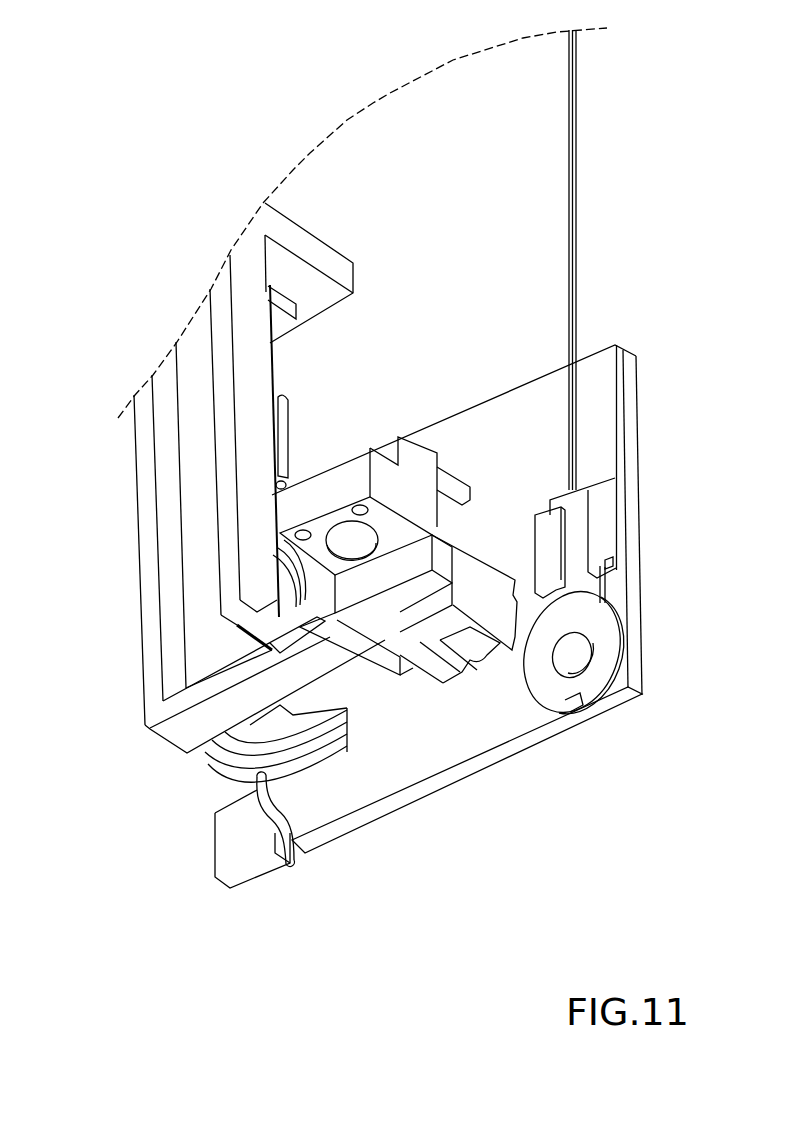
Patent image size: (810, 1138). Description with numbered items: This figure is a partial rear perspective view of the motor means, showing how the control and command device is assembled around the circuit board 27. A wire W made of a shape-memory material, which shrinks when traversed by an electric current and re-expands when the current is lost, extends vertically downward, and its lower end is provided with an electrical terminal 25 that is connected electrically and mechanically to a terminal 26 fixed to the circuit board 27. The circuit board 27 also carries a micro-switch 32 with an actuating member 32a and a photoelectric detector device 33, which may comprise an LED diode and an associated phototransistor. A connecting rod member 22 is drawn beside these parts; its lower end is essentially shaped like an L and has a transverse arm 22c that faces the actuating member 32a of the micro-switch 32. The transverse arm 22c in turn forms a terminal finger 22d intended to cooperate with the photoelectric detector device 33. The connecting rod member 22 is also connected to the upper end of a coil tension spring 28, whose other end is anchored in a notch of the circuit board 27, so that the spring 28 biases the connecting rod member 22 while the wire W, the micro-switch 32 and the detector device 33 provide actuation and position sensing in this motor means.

The wire W is at (577, 158).
The connecting rod member 22 is at (285, 338).
The transverse arm 22c is at (134, 620).
The terminal finger 22d is at (500, 512).
The electrical terminal 25 is at (607, 620).
The terminal 26 is at (600, 527).
The circuit board 27 is at (487, 432).
The coil tension spring 28 is at (210, 768).
The micro-switch 32 is at (352, 448).
The actuating member 32a is at (348, 540).
The photoelectric detector device 33 is at (464, 686).